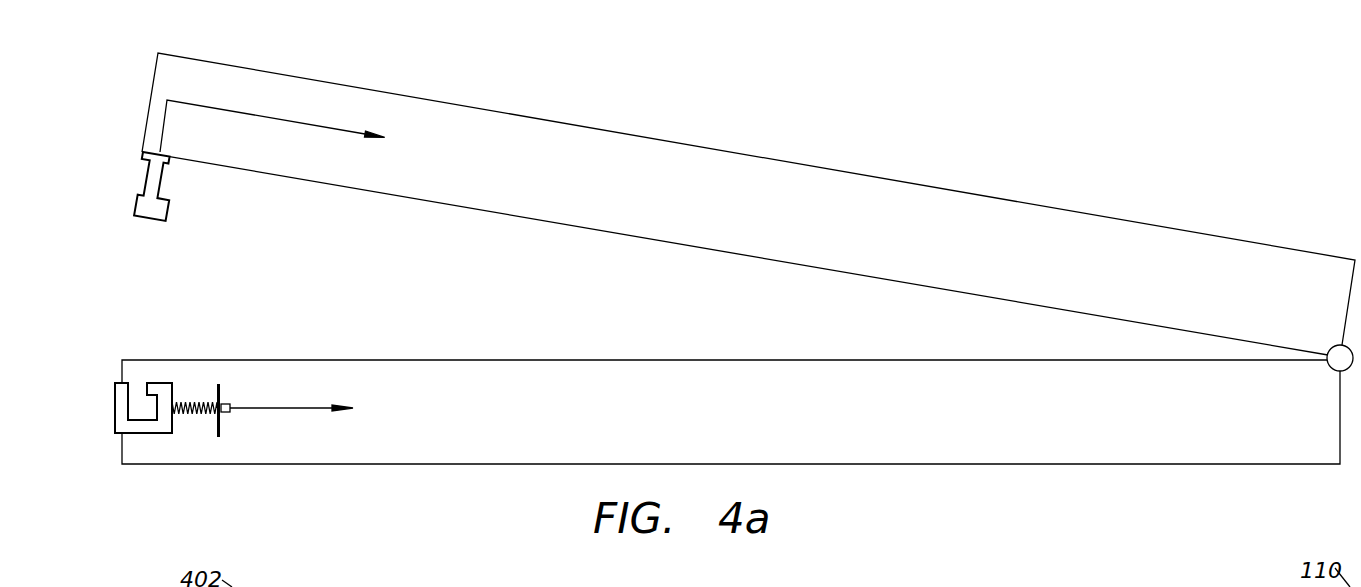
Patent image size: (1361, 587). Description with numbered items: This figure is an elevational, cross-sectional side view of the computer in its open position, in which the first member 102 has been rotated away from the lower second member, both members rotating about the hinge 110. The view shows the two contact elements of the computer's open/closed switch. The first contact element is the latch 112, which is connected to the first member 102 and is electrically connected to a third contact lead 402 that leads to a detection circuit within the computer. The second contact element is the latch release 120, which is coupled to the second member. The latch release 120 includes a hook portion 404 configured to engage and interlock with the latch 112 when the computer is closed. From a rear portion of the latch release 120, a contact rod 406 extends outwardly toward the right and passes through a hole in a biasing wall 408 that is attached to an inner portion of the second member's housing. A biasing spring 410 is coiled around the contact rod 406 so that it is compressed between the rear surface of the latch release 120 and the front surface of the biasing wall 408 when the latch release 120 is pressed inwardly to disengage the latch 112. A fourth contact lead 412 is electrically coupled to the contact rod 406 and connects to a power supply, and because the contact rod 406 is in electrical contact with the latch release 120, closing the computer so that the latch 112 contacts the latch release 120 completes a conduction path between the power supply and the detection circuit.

The first member 102 is at (262, 80).
The third contact lead 402 is at (288, 120).
The latch 112 is at (145, 198).
The hinge 110 is at (1348, 347).
The latch release 120 is at (120, 423).
The hook portion 404 is at (120, 398).
The biasing spring 410 is at (197, 402).
The biasing wall 408 is at (220, 437).
The contact rod 406 is at (230, 405).
The fourth contact lead 412 is at (308, 407).